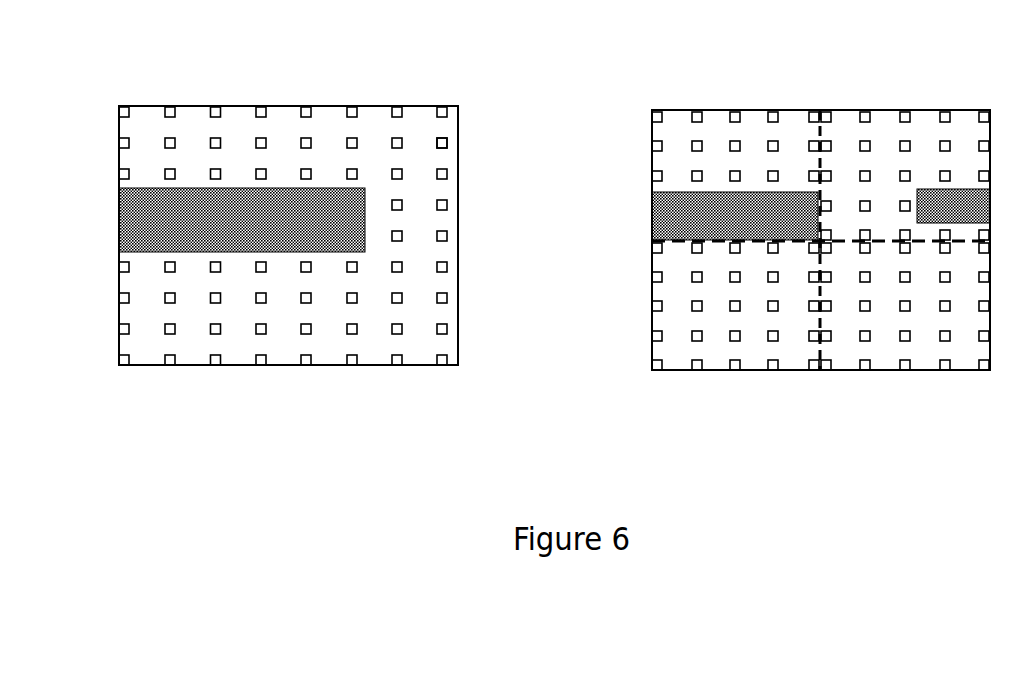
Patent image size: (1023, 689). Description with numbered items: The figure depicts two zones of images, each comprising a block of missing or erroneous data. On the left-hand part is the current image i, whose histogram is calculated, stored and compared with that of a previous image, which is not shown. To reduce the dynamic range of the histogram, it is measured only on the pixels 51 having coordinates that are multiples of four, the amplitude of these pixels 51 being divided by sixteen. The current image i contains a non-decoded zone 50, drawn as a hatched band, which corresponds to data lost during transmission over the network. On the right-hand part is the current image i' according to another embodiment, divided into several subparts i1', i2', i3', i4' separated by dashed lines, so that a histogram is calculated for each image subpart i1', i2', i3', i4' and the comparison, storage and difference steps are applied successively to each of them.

The current image i is at (296, 203).
The non-decoded zone 50 is at (119, 221).
The pixels 51 is at (443, 141).
The current image i' is at (821, 243).
The image subpart i1' is at (735, 137).
The image subpart i2' is at (905, 137).
The image subpart i3' is at (735, 336).
The image subpart i4' is at (905, 348).